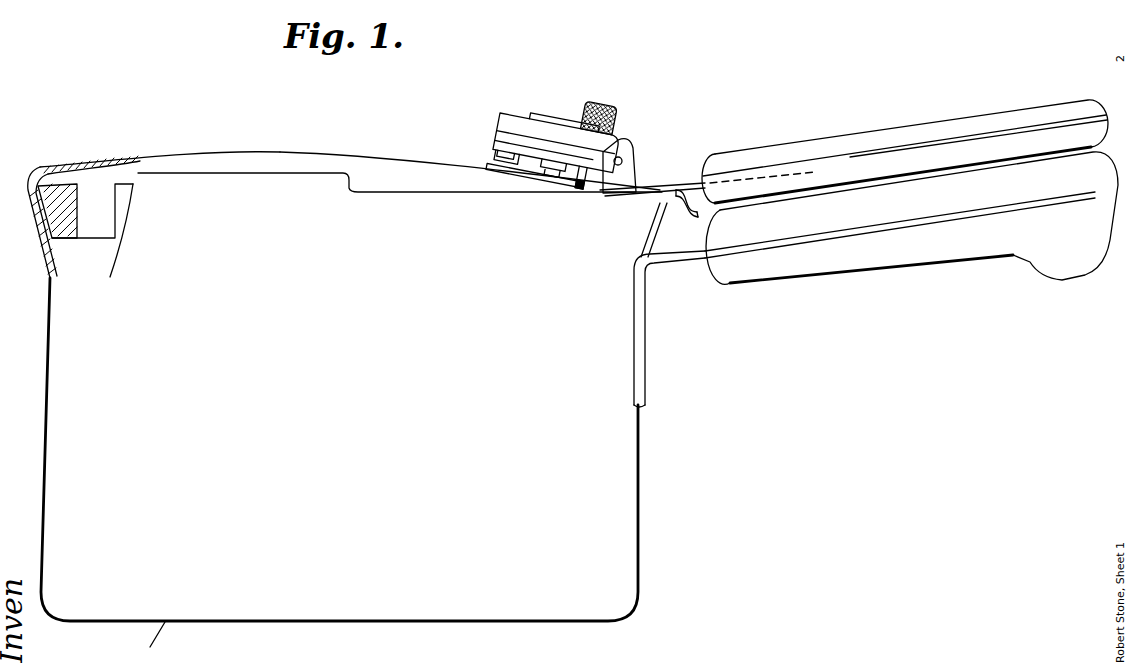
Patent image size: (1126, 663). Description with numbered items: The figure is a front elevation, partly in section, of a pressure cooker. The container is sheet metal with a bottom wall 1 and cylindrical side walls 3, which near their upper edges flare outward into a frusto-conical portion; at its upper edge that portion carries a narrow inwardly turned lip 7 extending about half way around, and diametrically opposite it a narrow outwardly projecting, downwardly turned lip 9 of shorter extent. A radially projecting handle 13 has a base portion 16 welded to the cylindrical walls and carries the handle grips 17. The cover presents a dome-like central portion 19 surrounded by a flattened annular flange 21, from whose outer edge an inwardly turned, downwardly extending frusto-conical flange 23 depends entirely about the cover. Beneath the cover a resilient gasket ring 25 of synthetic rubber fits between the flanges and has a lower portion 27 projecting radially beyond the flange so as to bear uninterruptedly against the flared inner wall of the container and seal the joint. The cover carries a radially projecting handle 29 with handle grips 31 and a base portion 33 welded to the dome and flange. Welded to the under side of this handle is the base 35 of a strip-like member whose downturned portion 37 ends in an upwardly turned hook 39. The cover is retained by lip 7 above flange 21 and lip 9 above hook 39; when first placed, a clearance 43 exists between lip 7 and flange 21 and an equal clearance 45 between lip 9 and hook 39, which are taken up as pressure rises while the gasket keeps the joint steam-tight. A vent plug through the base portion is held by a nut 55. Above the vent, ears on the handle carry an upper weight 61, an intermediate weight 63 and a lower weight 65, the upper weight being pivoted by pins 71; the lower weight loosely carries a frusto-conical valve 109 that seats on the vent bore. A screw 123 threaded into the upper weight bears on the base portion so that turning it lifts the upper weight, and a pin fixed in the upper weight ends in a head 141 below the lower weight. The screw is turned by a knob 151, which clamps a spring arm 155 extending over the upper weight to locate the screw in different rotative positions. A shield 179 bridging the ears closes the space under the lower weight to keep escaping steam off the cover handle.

The bottom wall 1 is at (154, 642).
The cylindrical side walls 3 is at (645, 460).
The inwardly turned lip 7 is at (58, 169).
The outwardly projecting downwardly turned lip 9 is at (686, 190).
The handle 13 is at (833, 234).
The base portion 16 is at (650, 367).
The handle grips 17 is at (938, 236).
The dome-like central portion 19 is at (195, 157).
The annular flange 21 is at (74, 171).
The frusto-conical flange 23 is at (44, 234).
The gasket ring 25 is at (70, 212).
The lower portion 27 is at (60, 240).
The cover handle 29 is at (880, 146).
The handle grips 31 is at (962, 152).
The base portion 33 is at (486, 166).
The base of strip-like member 35 is at (788, 184).
The downturned portion 37 is at (692, 207).
The hook 39 is at (652, 216).
The clearance 43 is at (50, 167).
The clearance 45 is at (662, 199).
The nut 55 is at (540, 169).
The upper weight 61 is at (506, 112).
The intermediate weight 63 is at (501, 121).
The lower weight 65 is at (504, 137).
The pins 71 is at (629, 151).
The frusto-conical valve 109 is at (552, 176).
The screw 123 is at (590, 187).
The head 141 is at (478, 148).
The knob 151 is at (623, 114).
The spring arm 155 is at (563, 111).
The shield 179 is at (637, 163).